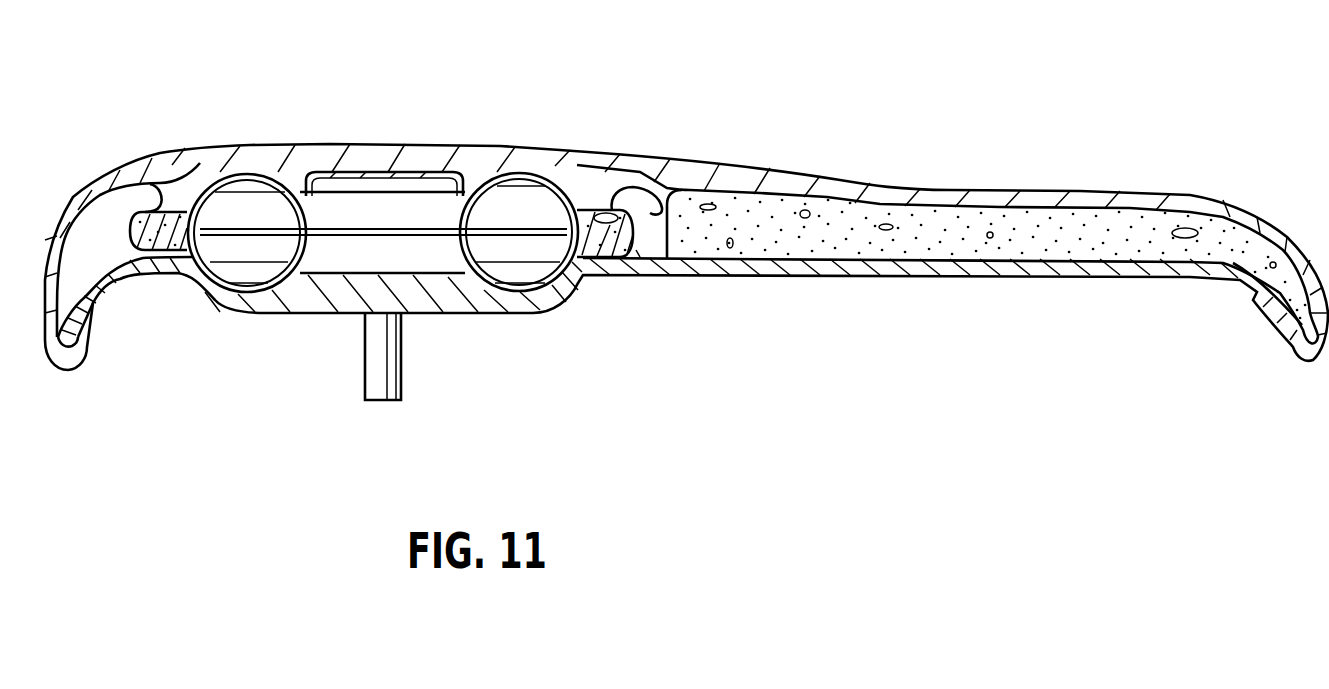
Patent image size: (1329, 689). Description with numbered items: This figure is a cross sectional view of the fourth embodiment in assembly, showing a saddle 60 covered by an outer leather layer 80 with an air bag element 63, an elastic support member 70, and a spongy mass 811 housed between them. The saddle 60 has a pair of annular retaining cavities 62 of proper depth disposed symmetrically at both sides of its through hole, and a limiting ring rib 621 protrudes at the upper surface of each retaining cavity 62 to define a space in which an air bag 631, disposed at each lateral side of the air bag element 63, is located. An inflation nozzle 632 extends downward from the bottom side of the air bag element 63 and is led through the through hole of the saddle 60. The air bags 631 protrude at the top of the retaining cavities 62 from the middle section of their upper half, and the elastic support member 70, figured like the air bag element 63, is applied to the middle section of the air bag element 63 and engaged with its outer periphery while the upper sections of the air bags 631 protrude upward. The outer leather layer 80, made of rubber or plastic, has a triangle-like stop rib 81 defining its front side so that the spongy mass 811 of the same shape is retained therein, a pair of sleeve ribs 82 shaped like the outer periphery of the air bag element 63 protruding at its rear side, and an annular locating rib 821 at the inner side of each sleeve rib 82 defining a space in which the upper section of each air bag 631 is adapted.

The saddle 60 is at (932, 332).
The annular retaining cavity 62 is at (531, 290).
The air bag element 63 is at (350, 220).
The elastic support member 70 is at (647, 288).
The outer leather layer 80 is at (865, 118).
The stop rib 81 is at (642, 195).
The sleeve rib 82 is at (625, 195).
The limiting ring rib 621 is at (451, 293).
The air bag 631 is at (565, 266).
The inflation nozzle 632 is at (366, 378).
The spongy mass 811 is at (1016, 217).
The annular locating rib 821 is at (424, 193).